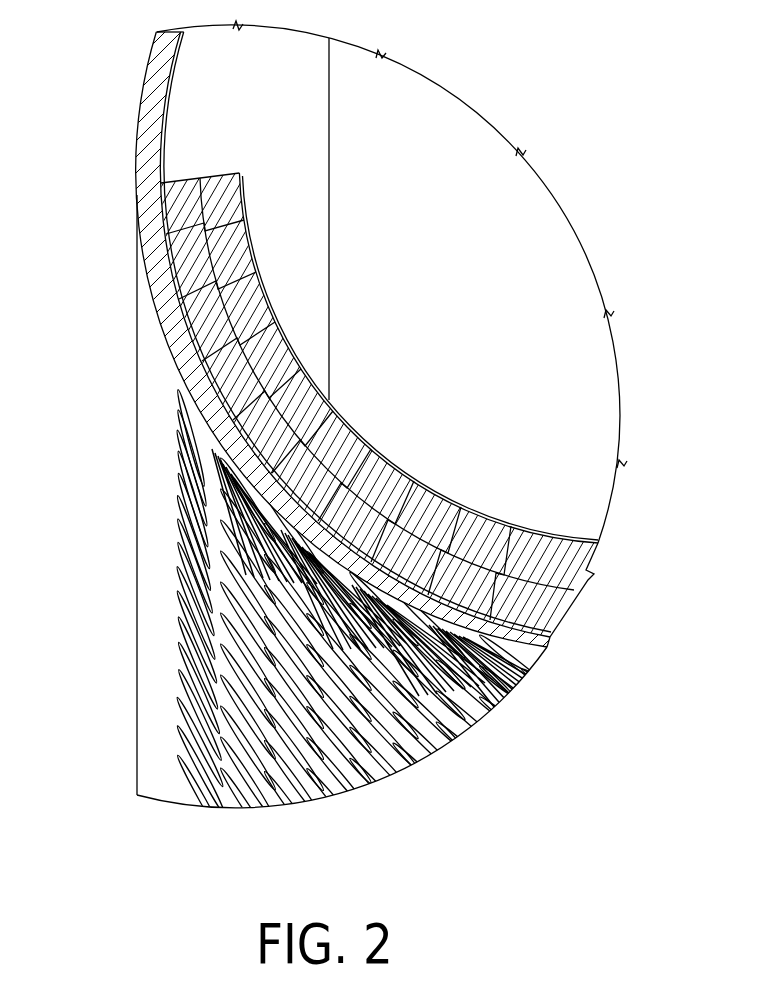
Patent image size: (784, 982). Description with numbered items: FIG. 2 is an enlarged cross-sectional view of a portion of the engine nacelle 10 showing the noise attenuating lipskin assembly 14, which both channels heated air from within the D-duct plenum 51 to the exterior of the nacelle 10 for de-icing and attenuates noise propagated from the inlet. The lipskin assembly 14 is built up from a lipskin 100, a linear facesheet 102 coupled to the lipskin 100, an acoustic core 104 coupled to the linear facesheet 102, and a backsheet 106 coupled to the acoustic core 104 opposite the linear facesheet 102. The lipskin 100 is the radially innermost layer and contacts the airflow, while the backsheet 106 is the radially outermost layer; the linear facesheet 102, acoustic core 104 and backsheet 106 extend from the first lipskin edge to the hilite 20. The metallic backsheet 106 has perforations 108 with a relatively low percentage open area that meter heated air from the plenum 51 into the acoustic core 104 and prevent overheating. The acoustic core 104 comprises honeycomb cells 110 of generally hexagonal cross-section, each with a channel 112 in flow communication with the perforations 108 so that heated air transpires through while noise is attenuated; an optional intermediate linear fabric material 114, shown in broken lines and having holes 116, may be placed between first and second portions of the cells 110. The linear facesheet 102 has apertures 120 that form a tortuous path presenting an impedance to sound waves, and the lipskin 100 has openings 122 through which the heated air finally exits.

The engine nacelle 10 is at (612, 193).
The lipskin assembly 14 is at (392, 427).
The hilite 20 is at (392, 340).
The D-duct plenum 51 is at (458, 231).
The lipskin 100 is at (168, 320).
The linear facesheet 102 is at (548, 640).
The acoustic core 104 is at (305, 375).
The backsheet 106 is at (529, 530).
The perforations 108 is at (352, 404).
The cells 110 is at (414, 470).
The channel 112 is at (449, 519).
The intermediate linear fabric material 114 is at (233, 263).
The holes 116 is at (208, 207).
The apertures 120 is at (205, 420).
The openings 122 is at (326, 622).